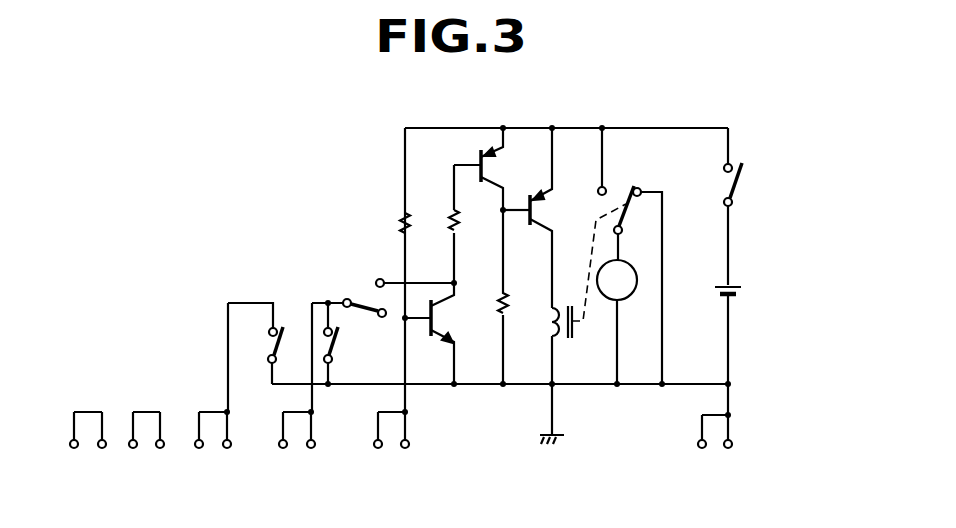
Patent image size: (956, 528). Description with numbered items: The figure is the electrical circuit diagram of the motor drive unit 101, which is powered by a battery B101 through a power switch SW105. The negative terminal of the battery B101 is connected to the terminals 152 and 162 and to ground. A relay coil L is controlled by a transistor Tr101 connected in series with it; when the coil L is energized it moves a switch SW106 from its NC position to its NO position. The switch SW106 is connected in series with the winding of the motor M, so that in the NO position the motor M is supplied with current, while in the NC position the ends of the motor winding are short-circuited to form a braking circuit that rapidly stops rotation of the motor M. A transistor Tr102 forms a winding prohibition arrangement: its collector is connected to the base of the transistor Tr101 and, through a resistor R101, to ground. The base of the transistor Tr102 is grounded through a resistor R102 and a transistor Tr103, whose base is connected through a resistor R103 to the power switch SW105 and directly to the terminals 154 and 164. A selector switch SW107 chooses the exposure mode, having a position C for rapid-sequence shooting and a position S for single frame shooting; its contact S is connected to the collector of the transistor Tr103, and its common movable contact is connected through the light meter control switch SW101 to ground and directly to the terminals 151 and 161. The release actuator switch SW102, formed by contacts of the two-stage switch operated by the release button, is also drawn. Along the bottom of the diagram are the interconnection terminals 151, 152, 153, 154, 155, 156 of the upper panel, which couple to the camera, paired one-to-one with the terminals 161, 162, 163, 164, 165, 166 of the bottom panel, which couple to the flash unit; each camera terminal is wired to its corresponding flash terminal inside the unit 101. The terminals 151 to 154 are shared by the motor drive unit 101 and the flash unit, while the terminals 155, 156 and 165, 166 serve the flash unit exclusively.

The motor drive unit 101 is at (598, 118).
The transistor Tr101 is at (546, 218).
The transistor Tr102 is at (510, 169).
The transistor Tr103 is at (447, 333).
The resistor R101 is at (499, 300).
The resistor R102 is at (450, 222).
The resistor R103 is at (403, 227).
The relay coil L is at (550, 320).
The motor M is at (627, 295).
The NO position NO is at (592, 165).
The NC position NC is at (647, 276).
The light meter control switch SW101 is at (338, 340).
The release actuator switch SW102 is at (278, 324).
The power switch SW105 is at (735, 182).
The switch SW106 is at (617, 197).
The selector switch SW107 is at (372, 297).
The contact S is at (414, 272).
The position C is at (381, 326).
The battery B101 is at (733, 286).
The interconnection terminal 151 is at (312, 448).
The interconnection terminal 152 is at (729, 448).
The interconnection terminal 153 is at (228, 448).
The interconnection terminal 154 is at (406, 448).
The interconnection terminal 155 is at (161, 448).
The interconnection terminal 156 is at (103, 448).
The interconnection terminal 161 is at (279, 448).
The interconnection terminal 162 is at (698, 448).
The interconnection terminal 163 is at (195, 448).
The interconnection terminal 164 is at (384, 448).
The interconnection terminal 165 is at (129, 448).
The interconnection terminal 166 is at (70, 448).